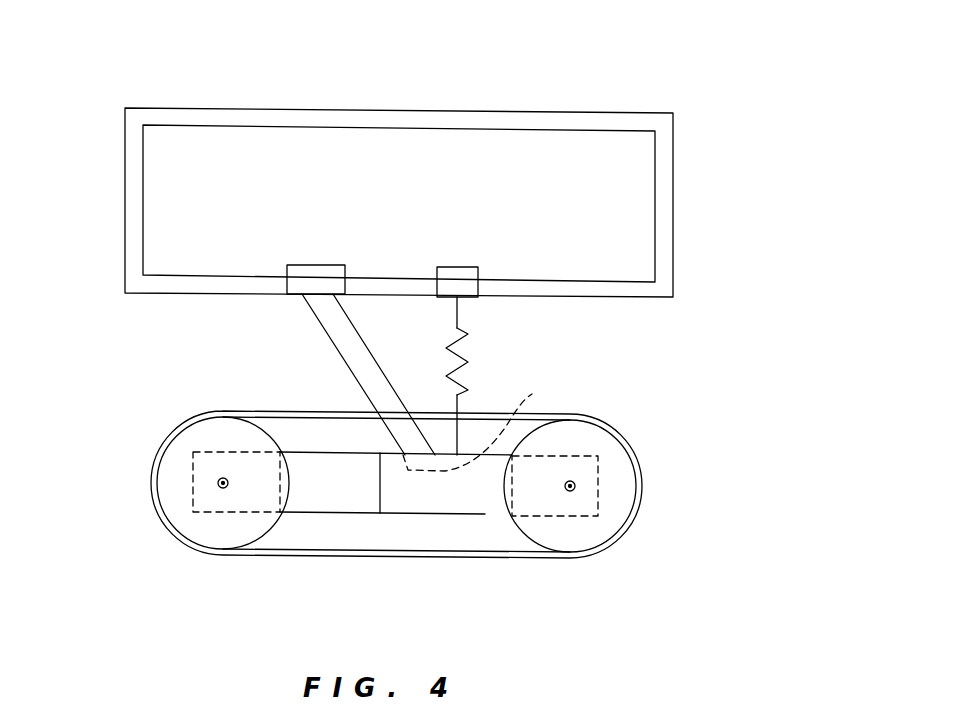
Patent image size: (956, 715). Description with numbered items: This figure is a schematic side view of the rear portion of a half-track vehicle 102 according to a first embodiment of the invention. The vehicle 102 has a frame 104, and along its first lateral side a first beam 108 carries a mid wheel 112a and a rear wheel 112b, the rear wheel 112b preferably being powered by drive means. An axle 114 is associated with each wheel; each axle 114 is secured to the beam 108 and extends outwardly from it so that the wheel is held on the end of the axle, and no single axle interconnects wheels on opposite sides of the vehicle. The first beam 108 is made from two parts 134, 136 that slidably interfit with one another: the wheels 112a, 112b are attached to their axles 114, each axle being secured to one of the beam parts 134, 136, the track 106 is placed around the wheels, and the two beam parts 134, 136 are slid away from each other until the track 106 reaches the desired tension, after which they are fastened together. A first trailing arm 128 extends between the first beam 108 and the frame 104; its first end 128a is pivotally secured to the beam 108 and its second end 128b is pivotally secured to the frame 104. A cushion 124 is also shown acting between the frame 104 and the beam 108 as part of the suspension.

The half-track vehicle 102 is at (457, 95).
The frame 104 is at (673, 251).
The track 106 is at (237, 412).
The first beam 108 is at (409, 533).
The mid wheel 112a is at (212, 540).
The rear wheel 112b is at (617, 513).
The axle 114 is at (217, 483).
The cushion 124 is at (475, 348).
The first trailing arm 128 is at (345, 362).
The first end 128a is at (543, 389).
The second end 128b is at (300, 298).
The beam part 134 is at (313, 560).
The beam part 136 is at (485, 513).